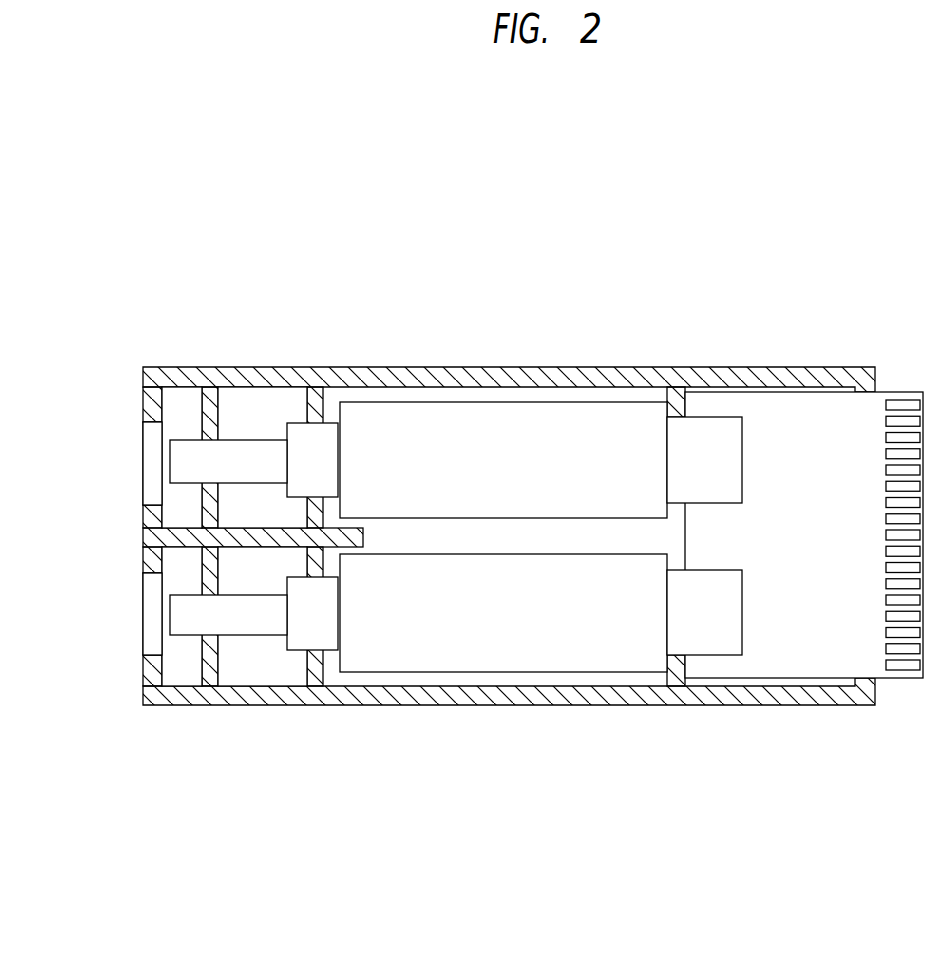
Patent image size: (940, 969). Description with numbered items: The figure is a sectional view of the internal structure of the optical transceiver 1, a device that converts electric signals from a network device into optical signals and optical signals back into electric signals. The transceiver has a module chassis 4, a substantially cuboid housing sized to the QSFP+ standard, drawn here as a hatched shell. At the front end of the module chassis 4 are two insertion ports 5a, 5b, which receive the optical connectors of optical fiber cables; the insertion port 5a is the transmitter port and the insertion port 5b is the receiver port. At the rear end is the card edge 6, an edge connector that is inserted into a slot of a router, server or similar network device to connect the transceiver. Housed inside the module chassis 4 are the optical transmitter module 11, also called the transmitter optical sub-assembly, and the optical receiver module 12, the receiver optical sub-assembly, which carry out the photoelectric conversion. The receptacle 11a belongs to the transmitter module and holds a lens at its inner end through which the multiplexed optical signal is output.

The optical transceiver 1 is at (475, 492).
The module chassis 4 is at (552, 705).
The insertion port 5a is at (150, 477).
The insertion port 5b is at (150, 599).
The card edge 6 is at (905, 678).
The optical transmitter module 11 is at (478, 402).
The receptacle 11a is at (247, 438).
The optical receiver module 12 is at (438, 672).